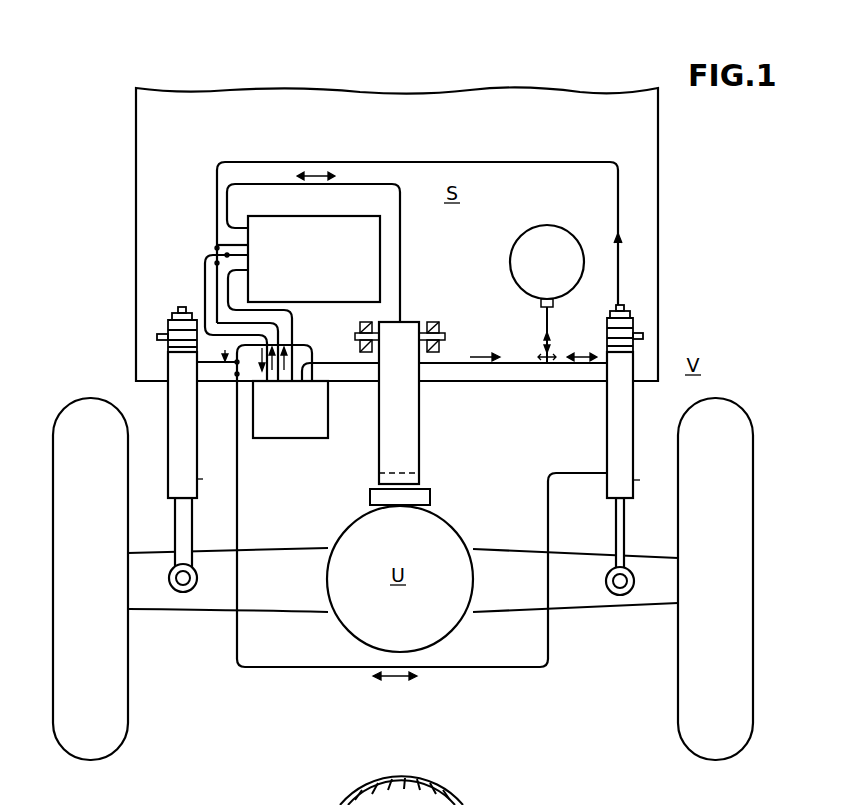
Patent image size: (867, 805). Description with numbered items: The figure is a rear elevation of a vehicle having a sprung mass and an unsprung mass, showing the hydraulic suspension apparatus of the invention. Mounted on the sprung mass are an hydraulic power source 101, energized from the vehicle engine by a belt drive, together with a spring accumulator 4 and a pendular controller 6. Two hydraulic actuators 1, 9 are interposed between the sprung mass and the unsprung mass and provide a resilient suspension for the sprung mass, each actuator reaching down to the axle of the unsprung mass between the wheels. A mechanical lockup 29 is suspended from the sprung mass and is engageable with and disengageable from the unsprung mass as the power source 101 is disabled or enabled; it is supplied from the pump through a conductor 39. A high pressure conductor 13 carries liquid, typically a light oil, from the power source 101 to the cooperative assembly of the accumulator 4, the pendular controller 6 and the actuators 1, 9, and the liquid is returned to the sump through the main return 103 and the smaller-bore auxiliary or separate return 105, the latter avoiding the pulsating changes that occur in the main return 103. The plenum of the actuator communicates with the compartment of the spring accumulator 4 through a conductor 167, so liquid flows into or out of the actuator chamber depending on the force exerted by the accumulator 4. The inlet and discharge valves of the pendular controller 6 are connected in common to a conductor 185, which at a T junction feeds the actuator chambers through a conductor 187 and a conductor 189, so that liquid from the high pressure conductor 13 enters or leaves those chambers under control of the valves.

The hydraulic actuator 1 is at (613, 408).
The spring accumulator 4 is at (541, 273).
The pendular controller 6 is at (284, 416).
The hydraulic actuator 9 is at (175, 408).
The high pressure conductor 13 is at (205, 256).
The mechanical lockup 29 is at (389, 408).
The conductor 39 is at (343, 182).
The hydraulic power source 101 is at (306, 260).
The main return 103 is at (217, 212).
The auxiliary or separate return 105 is at (225, 271).
The conductor 167 is at (570, 363).
The conductor 185 is at (313, 354).
The conductor 187 is at (238, 491).
The conductor 189 is at (216, 352).